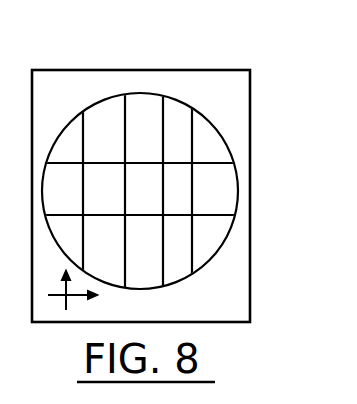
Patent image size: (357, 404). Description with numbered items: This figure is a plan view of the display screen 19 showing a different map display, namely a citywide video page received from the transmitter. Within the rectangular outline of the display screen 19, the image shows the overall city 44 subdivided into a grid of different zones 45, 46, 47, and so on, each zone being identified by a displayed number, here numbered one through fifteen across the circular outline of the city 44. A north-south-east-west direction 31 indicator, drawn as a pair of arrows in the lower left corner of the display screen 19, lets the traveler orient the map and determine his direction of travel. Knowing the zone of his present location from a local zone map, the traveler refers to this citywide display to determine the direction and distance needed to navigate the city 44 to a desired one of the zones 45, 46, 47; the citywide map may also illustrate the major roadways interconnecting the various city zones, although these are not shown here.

The substrate holder 19 is at (243, 140).
The city 44 is at (200, 254).
The zone 45 is at (107, 114).
The zone 46 is at (152, 116).
The zone 47 is at (203, 173).
The north-south-east-west direction 31 is at (67, 296).